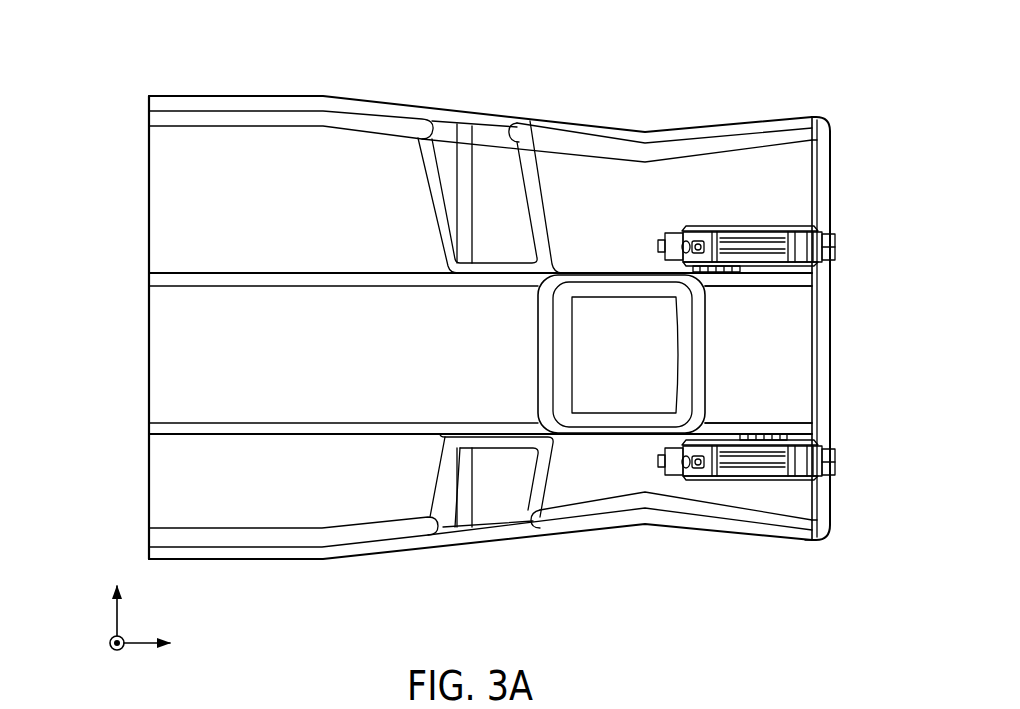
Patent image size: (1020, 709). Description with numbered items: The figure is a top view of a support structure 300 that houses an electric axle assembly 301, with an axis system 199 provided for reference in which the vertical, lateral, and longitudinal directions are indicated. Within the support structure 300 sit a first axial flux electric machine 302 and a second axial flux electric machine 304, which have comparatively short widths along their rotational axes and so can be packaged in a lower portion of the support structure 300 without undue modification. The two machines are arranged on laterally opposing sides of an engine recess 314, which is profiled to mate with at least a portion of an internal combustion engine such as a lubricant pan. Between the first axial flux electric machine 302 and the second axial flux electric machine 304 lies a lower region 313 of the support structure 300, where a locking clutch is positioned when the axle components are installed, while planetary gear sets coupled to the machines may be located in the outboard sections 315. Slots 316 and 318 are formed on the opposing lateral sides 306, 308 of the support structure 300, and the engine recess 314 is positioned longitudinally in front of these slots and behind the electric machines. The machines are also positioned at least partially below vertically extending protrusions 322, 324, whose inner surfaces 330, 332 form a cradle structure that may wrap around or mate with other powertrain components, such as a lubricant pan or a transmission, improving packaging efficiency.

The support structure 300 is at (135, 83).
The electric axle assembly 301 is at (843, 93).
The first axial flux electric machine 302 is at (859, 465).
The second axial flux electric machine 304 is at (848, 243).
The lateral side 306 is at (400, 569).
The lateral side 308 is at (380, 87).
The lower region 313 is at (804, 342).
The engine recess 314 is at (579, 343).
The outboard section 315 is at (767, 187).
The slot 316 is at (500, 122).
The slot 318 is at (498, 527).
The vertically extending protrusion 322 is at (812, 553).
The vertically extending protrusion 324 is at (806, 94).
The inner surface 330 is at (818, 495).
The inner surface 332 is at (800, 185).
The axis system 199 is at (148, 612).